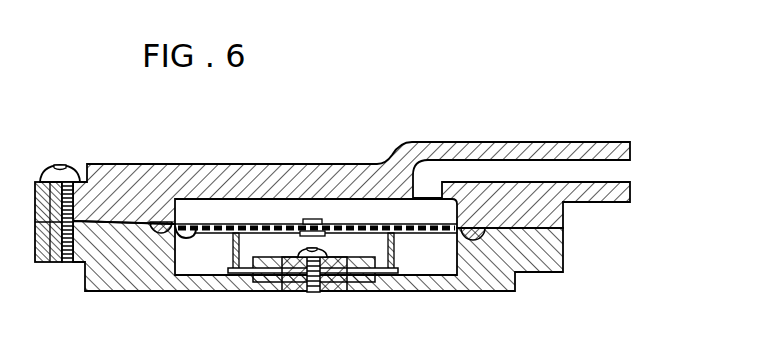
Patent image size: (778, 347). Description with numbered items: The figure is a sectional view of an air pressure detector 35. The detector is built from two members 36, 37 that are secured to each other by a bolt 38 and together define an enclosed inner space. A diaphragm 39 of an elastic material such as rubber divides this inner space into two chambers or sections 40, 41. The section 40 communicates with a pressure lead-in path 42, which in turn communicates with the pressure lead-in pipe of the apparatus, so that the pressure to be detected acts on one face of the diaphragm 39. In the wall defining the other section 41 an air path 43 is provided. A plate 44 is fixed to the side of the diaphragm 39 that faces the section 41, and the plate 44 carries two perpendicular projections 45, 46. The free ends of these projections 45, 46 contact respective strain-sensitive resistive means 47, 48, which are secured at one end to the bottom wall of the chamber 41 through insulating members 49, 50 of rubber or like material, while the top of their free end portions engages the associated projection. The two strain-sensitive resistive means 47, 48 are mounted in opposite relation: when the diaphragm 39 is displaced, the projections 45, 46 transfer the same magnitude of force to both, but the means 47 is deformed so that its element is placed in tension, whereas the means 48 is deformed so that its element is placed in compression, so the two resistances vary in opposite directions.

The air pressure detector 35 is at (566, 264).
The member 36 is at (114, 166).
The member 37 is at (114, 292).
The bolt 38 is at (57, 167).
The diaphragm 39 is at (194, 224).
The section 40 is at (243, 210).
The section 41 is at (182, 274).
The pressure lead-in path 42 is at (517, 172).
The air path 43 is at (212, 281).
The plate 44 is at (393, 230).
The projection 45 is at (234, 258).
The projection 46 is at (394, 258).
The strain-sensitive resistive means 47 is at (246, 283).
The strain-sensitive resistive means 48 is at (378, 279).
The insulating member 49 is at (275, 279).
The insulating member 50 is at (355, 283).